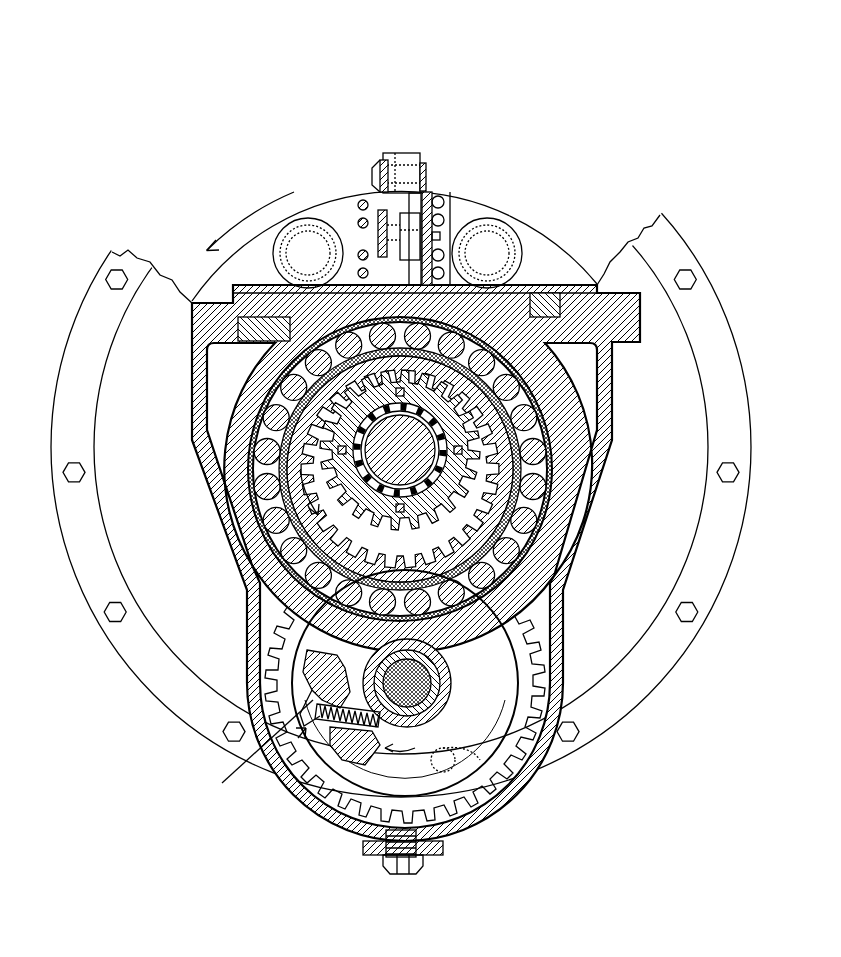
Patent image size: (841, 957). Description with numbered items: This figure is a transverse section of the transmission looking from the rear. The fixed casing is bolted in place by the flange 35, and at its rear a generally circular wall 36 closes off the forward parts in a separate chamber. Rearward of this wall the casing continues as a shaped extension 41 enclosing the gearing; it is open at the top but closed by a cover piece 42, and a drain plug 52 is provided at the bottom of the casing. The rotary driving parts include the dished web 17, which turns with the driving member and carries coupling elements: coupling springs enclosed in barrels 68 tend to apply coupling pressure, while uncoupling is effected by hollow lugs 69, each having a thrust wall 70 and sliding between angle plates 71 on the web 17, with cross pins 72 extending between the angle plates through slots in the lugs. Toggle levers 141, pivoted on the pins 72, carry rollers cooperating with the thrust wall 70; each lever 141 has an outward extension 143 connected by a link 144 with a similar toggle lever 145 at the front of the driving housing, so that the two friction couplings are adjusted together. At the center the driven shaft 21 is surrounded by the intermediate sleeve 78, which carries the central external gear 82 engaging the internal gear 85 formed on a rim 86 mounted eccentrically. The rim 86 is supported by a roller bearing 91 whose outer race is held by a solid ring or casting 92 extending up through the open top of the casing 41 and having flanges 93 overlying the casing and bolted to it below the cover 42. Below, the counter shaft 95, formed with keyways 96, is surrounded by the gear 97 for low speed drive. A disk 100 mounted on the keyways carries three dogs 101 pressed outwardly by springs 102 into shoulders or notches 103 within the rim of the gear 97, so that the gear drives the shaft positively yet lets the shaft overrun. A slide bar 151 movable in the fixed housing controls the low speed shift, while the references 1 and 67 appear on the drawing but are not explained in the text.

The direction arrow 1 is at (315, 750).
The dished web 17 is at (560, 256).
The driven shaft 21 is at (396, 516).
The flange 35 is at (72, 420).
The circular wall 36 is at (153, 454).
The shaped extension 41 is at (194, 418).
The cover piece 42 is at (243, 290).
The drain plug 52 is at (426, 866).
The roller 67 is at (487, 253).
The barrels 68 is at (308, 253).
The hollow lugs 69 is at (378, 215).
The thrust wall 70 is at (415, 225).
The angle plates 71 is at (432, 200).
The cross pins 72 is at (442, 236).
The intermediate sleeve 78 is at (352, 497).
The central gear 82 is at (372, 506).
The internal gear 85 is at (481, 514).
The rim 86 is at (528, 400).
The roller bearing 91 is at (540, 422).
The ring or casting 92 is at (536, 372).
The flanges 93 is at (245, 327).
The counter shaft 95 is at (424, 660).
The keyways 96 is at (432, 690).
The gear 97 is at (522, 640).
The disk 100 is at (432, 676).
The dogs 101 is at (336, 682).
The springs 102 is at (373, 745).
The shoulders or notches 103 is at (430, 788).
The levers 141 is at (415, 268).
The outward extension 143 is at (380, 165).
The link 144 is at (402, 153).
The toggle lever 145 is at (420, 163).
The bar 151 is at (585, 302).